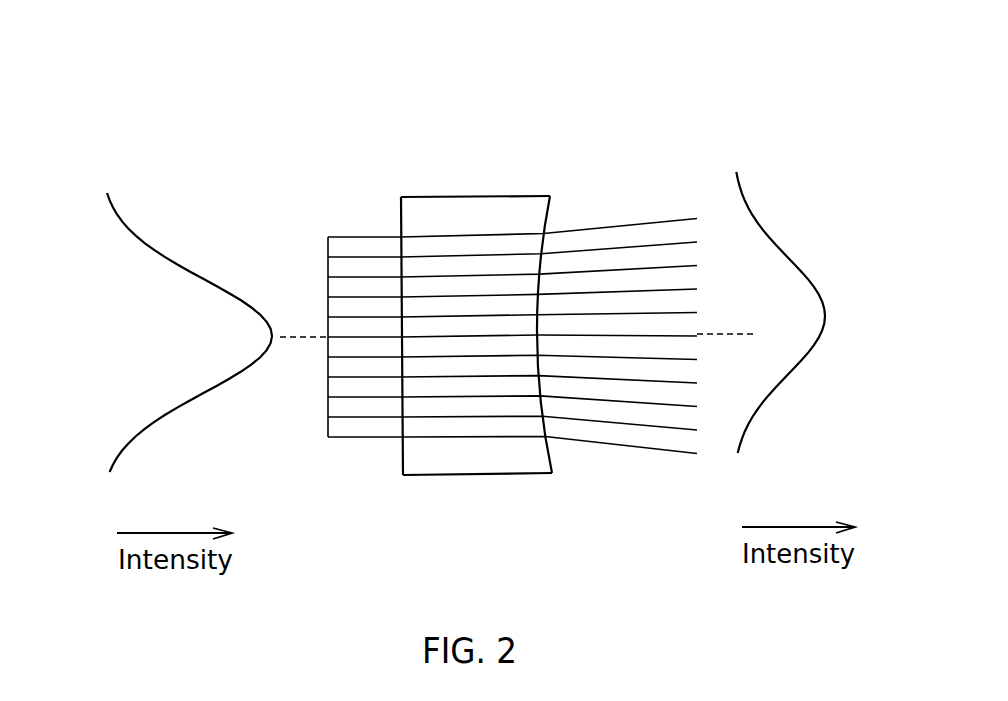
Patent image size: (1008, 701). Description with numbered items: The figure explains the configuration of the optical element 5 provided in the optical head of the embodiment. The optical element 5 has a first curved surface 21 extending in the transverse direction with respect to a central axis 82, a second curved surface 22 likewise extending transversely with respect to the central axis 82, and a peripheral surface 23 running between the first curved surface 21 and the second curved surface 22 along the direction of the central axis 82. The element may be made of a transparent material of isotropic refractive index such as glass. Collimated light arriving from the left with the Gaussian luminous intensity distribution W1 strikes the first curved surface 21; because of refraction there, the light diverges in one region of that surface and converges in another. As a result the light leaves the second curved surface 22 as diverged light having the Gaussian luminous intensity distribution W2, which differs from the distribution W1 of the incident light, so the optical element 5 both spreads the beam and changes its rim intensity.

The optical element 5 is at (473, 251).
The first curved surface 21 is at (400, 218).
The second curved surface 22 is at (552, 216).
The peripheral surface 23 is at (478, 197).
The central axis 82 is at (733, 332).
The Gaussian luminous intensity distribution of the incident light W1 is at (175, 262).
The Gaussian luminous intensity distribution of the emitted light W2 is at (773, 242).